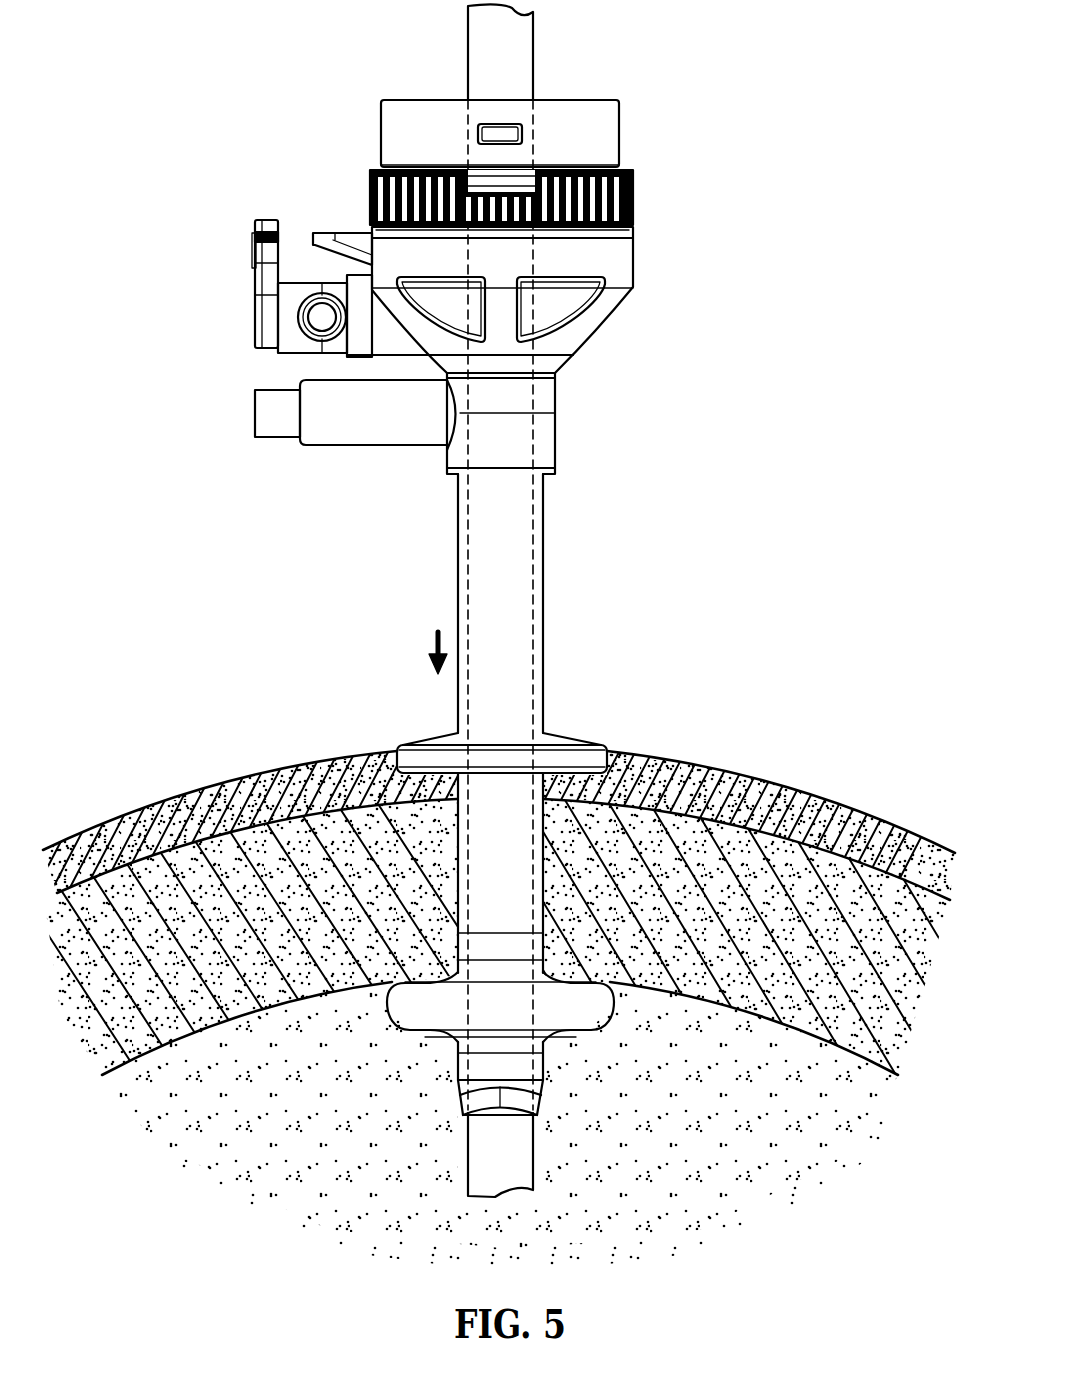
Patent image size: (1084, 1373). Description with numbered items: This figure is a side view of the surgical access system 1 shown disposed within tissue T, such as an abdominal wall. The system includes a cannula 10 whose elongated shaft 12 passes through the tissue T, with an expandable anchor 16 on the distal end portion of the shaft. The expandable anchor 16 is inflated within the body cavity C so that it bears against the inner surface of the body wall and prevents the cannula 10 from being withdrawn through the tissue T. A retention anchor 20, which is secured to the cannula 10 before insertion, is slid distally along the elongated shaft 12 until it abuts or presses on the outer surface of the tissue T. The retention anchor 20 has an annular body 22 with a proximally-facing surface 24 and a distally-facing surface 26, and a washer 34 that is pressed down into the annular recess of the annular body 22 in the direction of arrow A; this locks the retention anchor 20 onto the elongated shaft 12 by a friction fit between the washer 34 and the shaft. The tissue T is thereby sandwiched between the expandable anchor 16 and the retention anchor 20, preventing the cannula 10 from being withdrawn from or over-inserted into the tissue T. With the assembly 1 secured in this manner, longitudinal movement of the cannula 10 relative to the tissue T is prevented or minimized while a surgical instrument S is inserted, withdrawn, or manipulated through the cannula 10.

The surgical access system 1 is at (352, 98).
The cannula 10 is at (659, 173).
The elongated shaft 12 is at (546, 558).
The expandable anchor 16 is at (403, 1010).
The retention anchor 20 is at (481, 710).
The annular body 22 is at (413, 758).
The proximally-facing surface 24 is at (597, 740).
The distally-facing surface 26 is at (608, 752).
The washer 34 is at (565, 737).
The surgical instrument S is at (528, 60).
The tissue T is at (733, 775).
The body cavity C is at (728, 1087).
The arrow A is at (438, 638).